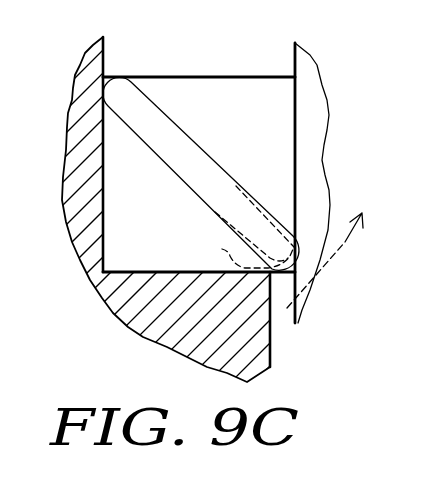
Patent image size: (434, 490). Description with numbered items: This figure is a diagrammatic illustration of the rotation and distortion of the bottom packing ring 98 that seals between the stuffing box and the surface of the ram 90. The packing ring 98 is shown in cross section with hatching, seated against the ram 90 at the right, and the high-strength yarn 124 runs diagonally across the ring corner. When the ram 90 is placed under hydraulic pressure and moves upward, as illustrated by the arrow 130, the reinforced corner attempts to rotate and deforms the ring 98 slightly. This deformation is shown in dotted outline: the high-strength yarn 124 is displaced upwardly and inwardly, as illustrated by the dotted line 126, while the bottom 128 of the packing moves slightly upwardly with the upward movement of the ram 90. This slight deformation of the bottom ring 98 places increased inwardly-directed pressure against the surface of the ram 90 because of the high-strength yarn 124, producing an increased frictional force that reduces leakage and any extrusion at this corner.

The packing ring 98 is at (123, 140).
The ram 90 is at (316, 168).
The high-strength yarn 124 is at (185, 134).
The dotted line 126 is at (258, 198).
The bottom of the packing 128 is at (222, 249).
The arrow 130 is at (345, 242).